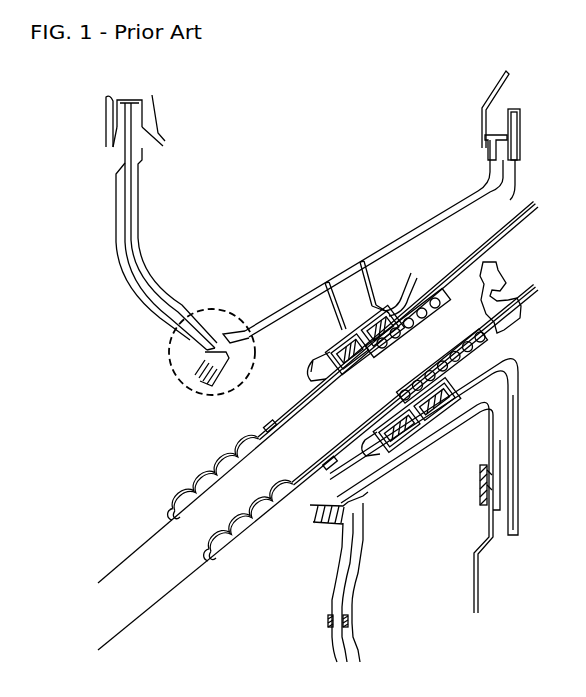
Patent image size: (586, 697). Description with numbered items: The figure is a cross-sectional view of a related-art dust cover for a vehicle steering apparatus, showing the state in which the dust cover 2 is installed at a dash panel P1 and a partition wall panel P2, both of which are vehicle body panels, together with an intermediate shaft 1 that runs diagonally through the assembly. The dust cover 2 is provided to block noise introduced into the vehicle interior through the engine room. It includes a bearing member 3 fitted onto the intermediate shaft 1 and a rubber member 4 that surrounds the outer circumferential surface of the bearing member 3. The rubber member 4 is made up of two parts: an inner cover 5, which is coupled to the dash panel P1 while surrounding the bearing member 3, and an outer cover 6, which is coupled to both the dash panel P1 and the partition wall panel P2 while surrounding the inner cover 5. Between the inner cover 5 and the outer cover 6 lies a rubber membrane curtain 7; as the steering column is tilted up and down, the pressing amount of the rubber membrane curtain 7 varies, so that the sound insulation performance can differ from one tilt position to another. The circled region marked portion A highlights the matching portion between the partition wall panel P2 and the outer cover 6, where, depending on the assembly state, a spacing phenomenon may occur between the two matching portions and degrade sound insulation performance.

The intermediate shaft 1 is at (143, 542).
The dust cover 2 is at (344, 238).
The bearing member 3 is at (300, 357).
The rubber member 4 is at (369, 234).
The inner cover 5 is at (468, 207).
The outer cover 6 is at (391, 240).
The rubber membrane curtain 7 is at (322, 284).
The portion A is at (168, 353).
The dash panel P1 is at (493, 90).
The partition wall panel P2 is at (115, 212).